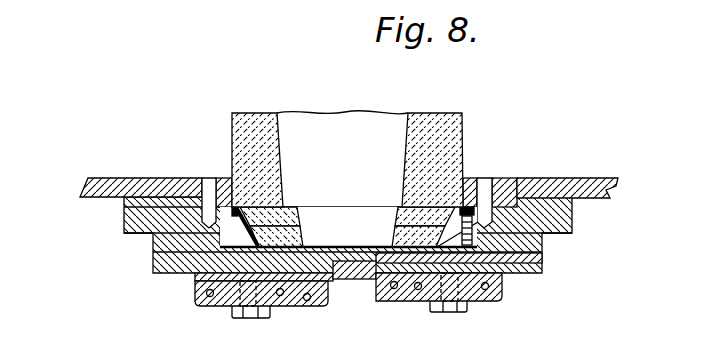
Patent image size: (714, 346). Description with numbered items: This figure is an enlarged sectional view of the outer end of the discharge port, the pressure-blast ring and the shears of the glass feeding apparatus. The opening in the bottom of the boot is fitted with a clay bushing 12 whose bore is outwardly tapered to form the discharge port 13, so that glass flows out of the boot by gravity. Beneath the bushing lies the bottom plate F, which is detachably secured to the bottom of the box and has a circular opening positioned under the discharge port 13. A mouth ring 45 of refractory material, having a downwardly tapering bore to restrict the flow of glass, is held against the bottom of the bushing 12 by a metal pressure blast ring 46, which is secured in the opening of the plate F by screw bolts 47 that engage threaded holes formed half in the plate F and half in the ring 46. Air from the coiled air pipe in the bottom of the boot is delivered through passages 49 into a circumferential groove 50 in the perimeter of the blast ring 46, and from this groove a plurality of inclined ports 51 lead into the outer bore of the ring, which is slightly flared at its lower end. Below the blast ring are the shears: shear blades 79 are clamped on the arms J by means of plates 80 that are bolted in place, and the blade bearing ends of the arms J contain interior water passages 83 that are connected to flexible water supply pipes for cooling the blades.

The clay bushing 12 is at (406, 152).
The discharge port 13 is at (347, 217).
The mouth ring 45 is at (284, 212).
The pressure blast ring 46 is at (263, 233).
The screw bolts 47 is at (243, 202).
The passages 49 is at (203, 178).
The circumferential groove 50 is at (463, 225).
The inclined ports 51 is at (243, 208).
The shear blades 79 is at (363, 280).
The plates 80 is at (293, 305).
The interior water passages 83 is at (208, 306).
The bottom plate F is at (349, 205).
The shear arms J is at (318, 274).